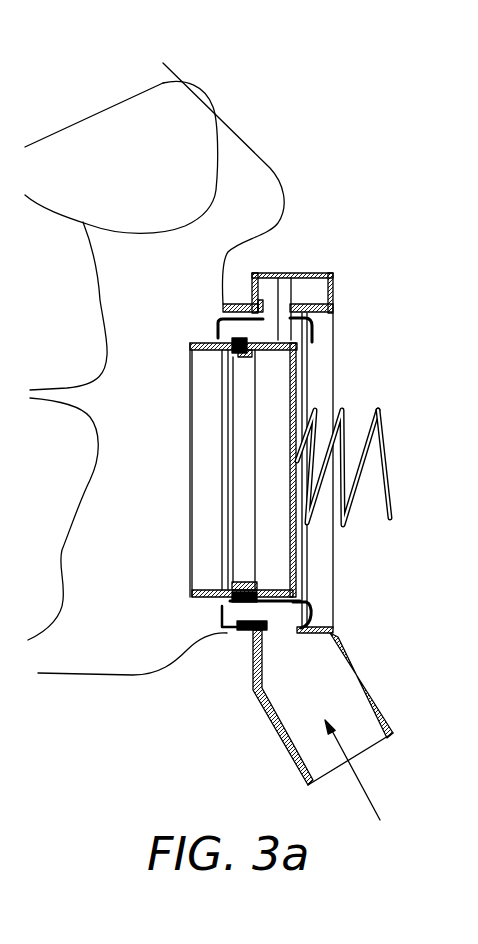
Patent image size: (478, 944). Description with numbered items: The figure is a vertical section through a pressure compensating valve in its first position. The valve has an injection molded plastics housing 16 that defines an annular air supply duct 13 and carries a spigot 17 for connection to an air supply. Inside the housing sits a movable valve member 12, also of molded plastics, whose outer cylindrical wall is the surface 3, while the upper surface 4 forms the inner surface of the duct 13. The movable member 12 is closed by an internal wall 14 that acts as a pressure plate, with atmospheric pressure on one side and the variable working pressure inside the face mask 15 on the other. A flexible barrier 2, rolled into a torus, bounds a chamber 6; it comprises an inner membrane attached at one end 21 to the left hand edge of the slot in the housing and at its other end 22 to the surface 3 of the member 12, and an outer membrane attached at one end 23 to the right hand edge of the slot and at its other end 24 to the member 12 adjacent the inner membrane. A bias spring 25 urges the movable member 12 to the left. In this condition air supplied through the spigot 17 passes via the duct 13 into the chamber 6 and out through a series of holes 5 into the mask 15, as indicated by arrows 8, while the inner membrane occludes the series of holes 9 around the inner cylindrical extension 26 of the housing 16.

The flexible barrier 2 is at (313, 344).
The lower planar surface 3 is at (187, 345).
The upper planar surface 4 is at (346, 305).
The holes 5 is at (220, 600).
The chamber 6 is at (246, 628).
The arrows 8 is at (272, 312).
The holes 9 is at (248, 303).
The movable valve member 12 is at (210, 433).
The annular air supply duct 13 is at (325, 271).
The internal wall 14 is at (300, 556).
The face mask 15 is at (243, 147).
The housing 16 is at (334, 286).
The spigot 17 is at (365, 683).
The end of inner membrane 21 is at (279, 276).
The end of inner membrane 22 is at (243, 353).
The end of outer membrane 23 is at (310, 274).
The end of outer membrane 24 is at (243, 354).
The bias spring 25 is at (386, 448).
The inner cylindrical extension 26 is at (230, 304).